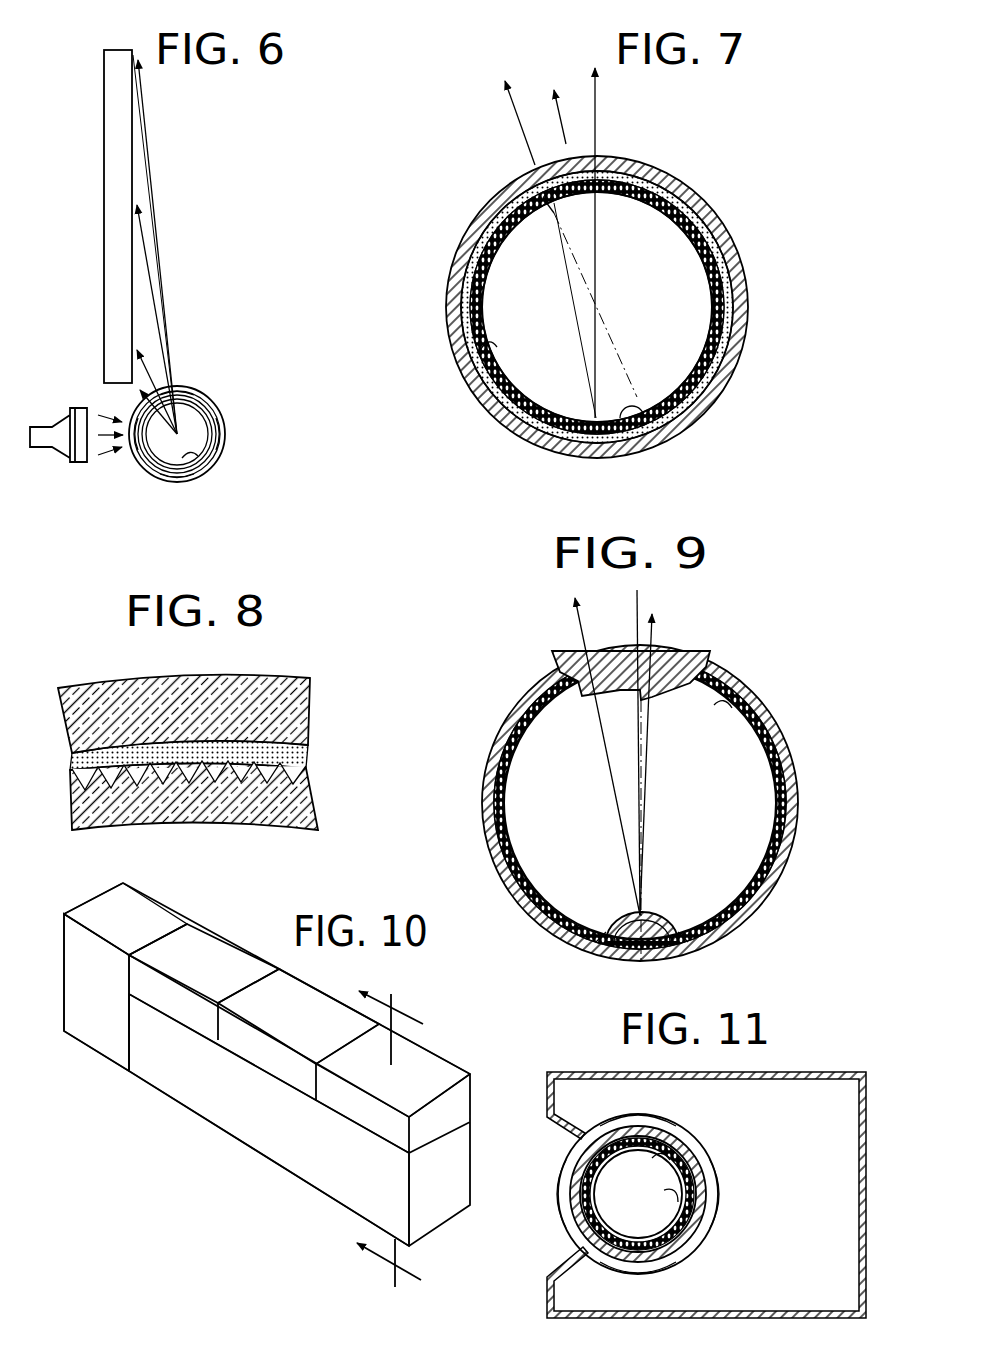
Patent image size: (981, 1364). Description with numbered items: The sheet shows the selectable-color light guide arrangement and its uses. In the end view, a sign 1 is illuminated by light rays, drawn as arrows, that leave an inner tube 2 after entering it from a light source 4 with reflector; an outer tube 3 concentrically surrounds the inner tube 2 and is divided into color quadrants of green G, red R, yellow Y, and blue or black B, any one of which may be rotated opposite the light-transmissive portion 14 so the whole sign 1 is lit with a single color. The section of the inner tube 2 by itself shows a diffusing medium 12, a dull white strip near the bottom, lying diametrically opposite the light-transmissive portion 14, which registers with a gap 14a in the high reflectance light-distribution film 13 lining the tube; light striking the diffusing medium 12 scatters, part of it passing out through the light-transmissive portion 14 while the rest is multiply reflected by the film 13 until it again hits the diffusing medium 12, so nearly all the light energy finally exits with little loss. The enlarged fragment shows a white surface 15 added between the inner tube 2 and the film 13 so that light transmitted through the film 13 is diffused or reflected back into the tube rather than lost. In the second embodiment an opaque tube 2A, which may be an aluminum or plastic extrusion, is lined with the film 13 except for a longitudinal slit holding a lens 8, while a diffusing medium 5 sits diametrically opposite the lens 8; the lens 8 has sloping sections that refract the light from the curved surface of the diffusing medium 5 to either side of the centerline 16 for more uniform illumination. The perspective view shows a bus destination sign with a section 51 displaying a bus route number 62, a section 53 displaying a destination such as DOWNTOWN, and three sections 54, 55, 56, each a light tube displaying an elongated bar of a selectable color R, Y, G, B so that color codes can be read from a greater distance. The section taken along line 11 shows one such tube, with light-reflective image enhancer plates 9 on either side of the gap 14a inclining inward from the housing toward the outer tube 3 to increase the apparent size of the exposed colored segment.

In FIG. 6, the sign 1 is at (110, 176).
In FIG. 6, the inner tube 2 is at (158, 481).
In FIG. 7, the inner tube 2 is at (752, 366).
In FIG. 8, the inner tube 2 is at (292, 722).
In FIG. 11, the inner tube 2 is at (607, 1140).
In FIG. 9, the opaque tube 2A is at (797, 772).
In FIG. 6, the outer tube 3 is at (200, 396).
In FIG. 11, the outer tube 3 is at (683, 1247).
In FIG. 6, the light source 4 is at (72, 425).
In FIG. 9, the diffusing medium 5 is at (614, 908).
In FIG. 9, the lens 8 is at (708, 646).
In FIG. 11, the image enhancer plates 9 is at (562, 1143).
In FIG. 10, the section line 11 is at (403, 1143).
In FIG. 6, the diffusing medium 12 is at (203, 452).
In FIG. 7, the diffusing medium 12 is at (645, 417).
In FIG. 11, the diffusing medium 12 is at (668, 1197).
In FIG. 6, the high reflectance light-distribution film 13 is at (213, 420).
In FIG. 7, the high reflectance light-distribution film 13 is at (650, 172).
In FIG. 8, the high reflectance light-distribution film 13 is at (302, 811).
In FIG. 9, the high reflectance light-distribution film 13 is at (729, 710).
In FIG. 11, the high reflectance light-distribution film 13 is at (690, 1132).
In FIG. 7, the light-transmissive portion 14 is at (586, 147).
In FIG. 7, the gap 14a is at (576, 190).
In FIG. 7, the white surface 15 is at (741, 270).
In FIG. 8, the white surface 15 is at (300, 765).
In FIG. 9, the centerline 16 is at (640, 598).
In FIG. 10, the section 51 is at (145, 908).
In FIG. 10, the section 53 is at (270, 1139).
In FIG. 10, the section 54 is at (212, 962).
In FIG. 10, the section 55 is at (296, 999).
In FIG. 10, the section 56 is at (436, 1074).
In FIG. 10, the route number display 62 is at (96, 992).
In FIG. 6, the red R is at (186, 388).
In FIG. 11, the red R is at (637, 1112).
In FIG. 6, the yellow Y is at (225, 434).
In FIG. 11, the yellow Y is at (560, 1187).
In FIG. 6, the green G is at (183, 482).
In FIG. 11, the green G is at (637, 1273).
In FIG. 6, the blue or black B is at (140, 462).
In FIG. 11, the blue or black B is at (717, 1184).